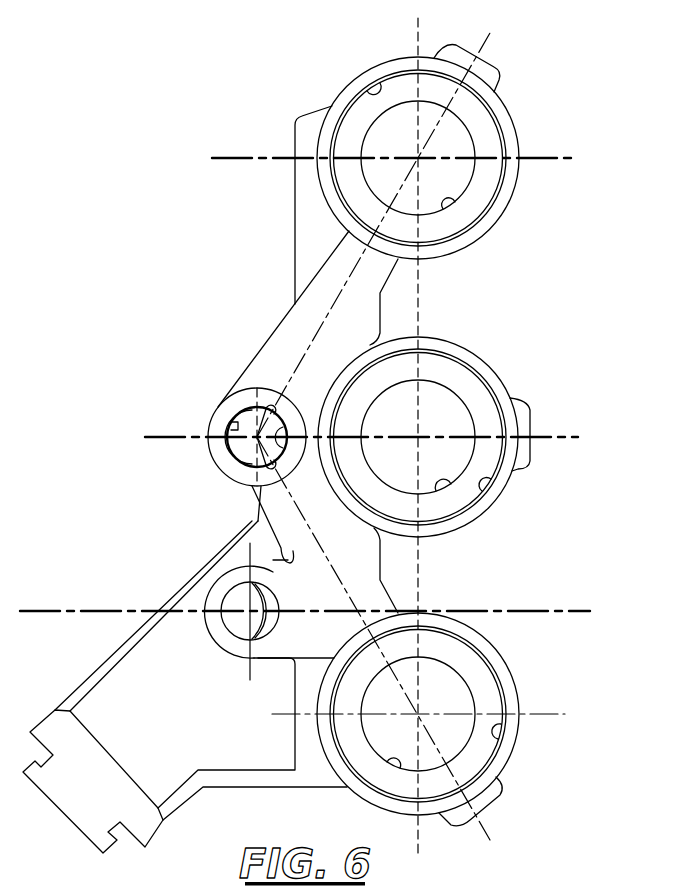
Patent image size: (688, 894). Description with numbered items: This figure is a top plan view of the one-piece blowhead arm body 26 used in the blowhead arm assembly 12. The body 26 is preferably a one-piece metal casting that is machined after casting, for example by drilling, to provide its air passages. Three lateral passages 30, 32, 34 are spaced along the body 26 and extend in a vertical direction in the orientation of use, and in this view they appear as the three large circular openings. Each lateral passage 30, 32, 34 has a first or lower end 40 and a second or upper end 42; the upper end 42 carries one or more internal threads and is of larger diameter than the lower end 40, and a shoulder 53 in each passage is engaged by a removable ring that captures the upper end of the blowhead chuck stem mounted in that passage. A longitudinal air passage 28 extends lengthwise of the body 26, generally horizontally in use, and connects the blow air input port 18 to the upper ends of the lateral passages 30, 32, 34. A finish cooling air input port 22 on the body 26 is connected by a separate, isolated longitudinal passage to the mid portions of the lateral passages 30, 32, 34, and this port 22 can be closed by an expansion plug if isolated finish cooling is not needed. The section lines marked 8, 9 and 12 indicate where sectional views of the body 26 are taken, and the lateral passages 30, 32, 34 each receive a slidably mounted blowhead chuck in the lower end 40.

The blowhead arm body 26 is at (305, 88).
The lateral passage 30 is at (448, 145).
The lateral passage 32 is at (447, 420).
The lateral passage 34 is at (392, 737).
The shoulder 53 is at (477, 117).
The second or upper end 42 is at (383, 84).
The first or lower end 40 is at (450, 195).
The blow air input port 18 is at (237, 424).
The longitudinal air passage 28 is at (267, 410).
The finish cooling air input port 22 is at (233, 600).
The section line 8- 8 is at (222, 170).
The section line 9- 9 is at (162, 449).
The blowhead arm assembly 12 is at (39, 623).